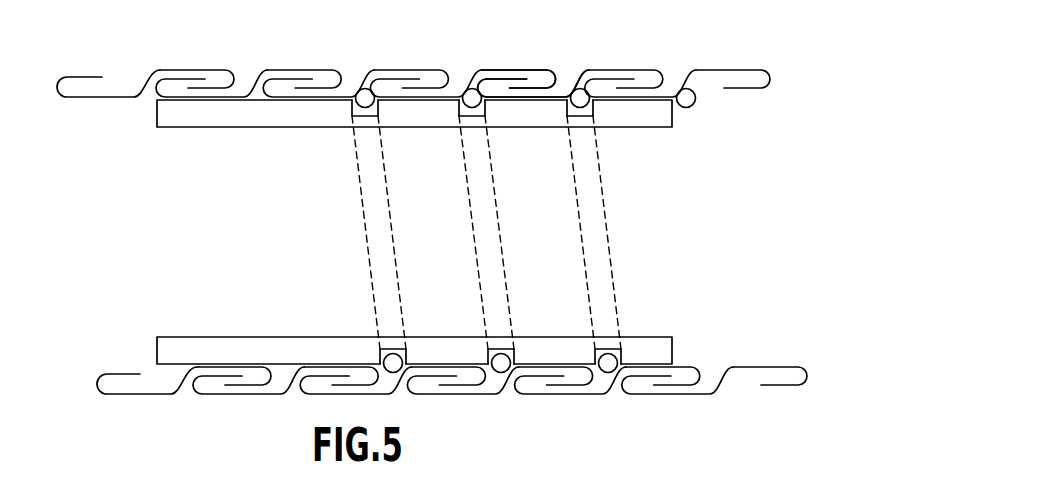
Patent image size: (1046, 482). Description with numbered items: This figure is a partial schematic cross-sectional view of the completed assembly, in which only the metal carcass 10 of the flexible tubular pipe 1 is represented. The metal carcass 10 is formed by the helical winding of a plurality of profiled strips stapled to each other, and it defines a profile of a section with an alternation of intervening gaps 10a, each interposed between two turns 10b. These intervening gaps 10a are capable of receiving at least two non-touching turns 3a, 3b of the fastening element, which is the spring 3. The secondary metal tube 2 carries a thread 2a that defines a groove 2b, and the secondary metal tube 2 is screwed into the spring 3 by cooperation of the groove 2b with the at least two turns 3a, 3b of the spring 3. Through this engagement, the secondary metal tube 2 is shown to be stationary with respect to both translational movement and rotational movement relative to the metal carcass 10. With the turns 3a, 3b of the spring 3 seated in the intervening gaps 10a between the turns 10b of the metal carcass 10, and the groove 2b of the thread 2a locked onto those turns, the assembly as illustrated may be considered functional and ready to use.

The flexible tubular pipe 1 is at (638, 35).
The secondary metal tube 2 is at (172, 335).
The thread 2a is at (606, 250).
The groove 2b is at (466, 119).
The spring 3 is at (694, 107).
The turn of the spring 3a is at (608, 373).
The turn of the spring 3b is at (501, 373).
The metal carcass 10 is at (770, 84).
The intervening gap 10a is at (477, 74).
The turn 10b is at (253, 52).